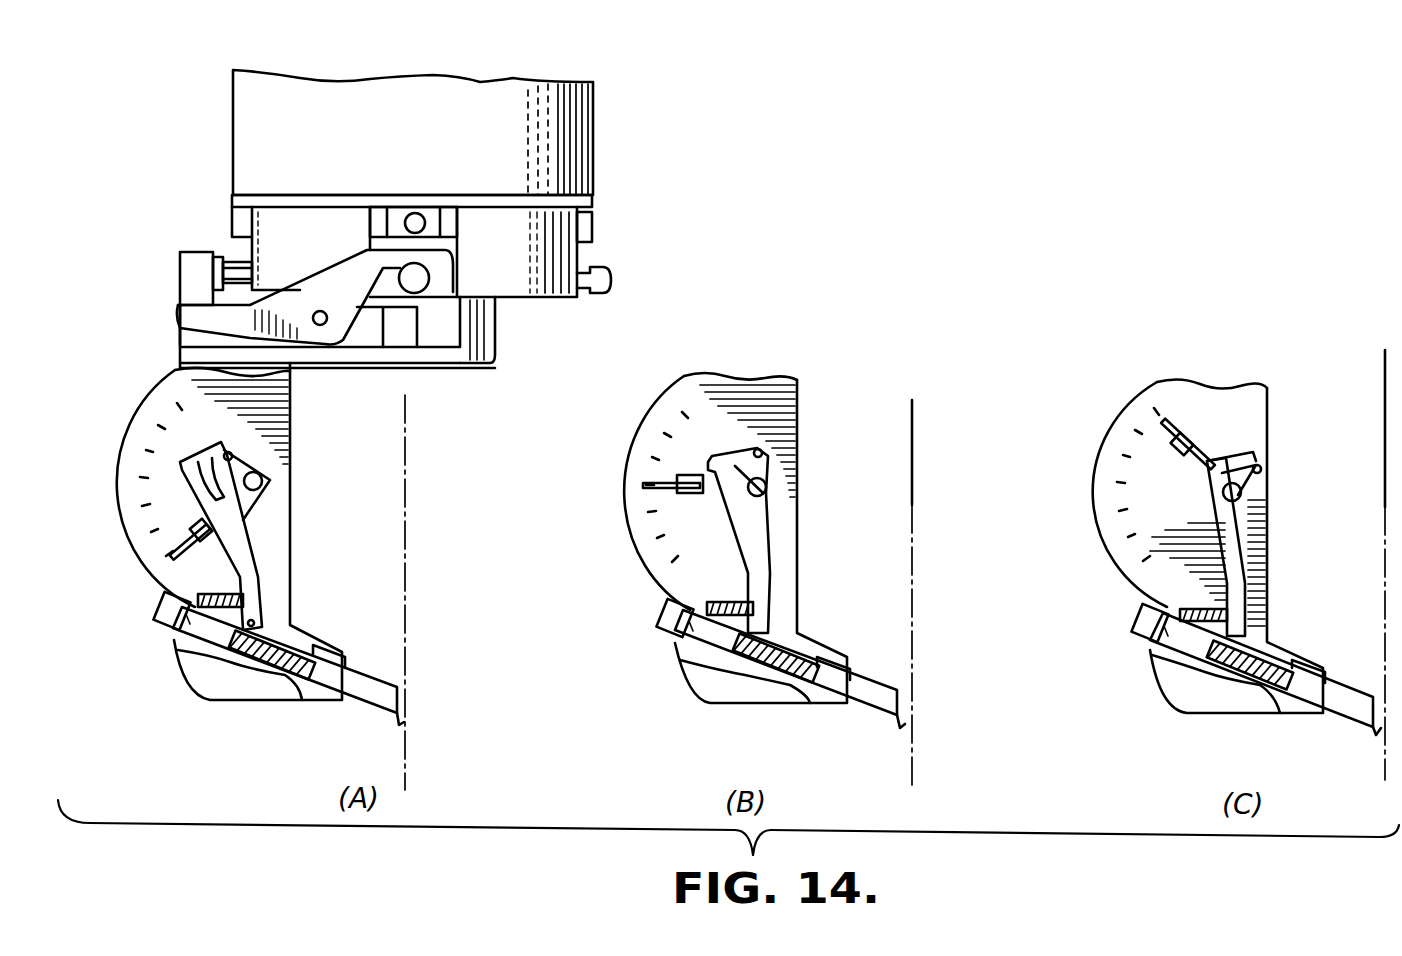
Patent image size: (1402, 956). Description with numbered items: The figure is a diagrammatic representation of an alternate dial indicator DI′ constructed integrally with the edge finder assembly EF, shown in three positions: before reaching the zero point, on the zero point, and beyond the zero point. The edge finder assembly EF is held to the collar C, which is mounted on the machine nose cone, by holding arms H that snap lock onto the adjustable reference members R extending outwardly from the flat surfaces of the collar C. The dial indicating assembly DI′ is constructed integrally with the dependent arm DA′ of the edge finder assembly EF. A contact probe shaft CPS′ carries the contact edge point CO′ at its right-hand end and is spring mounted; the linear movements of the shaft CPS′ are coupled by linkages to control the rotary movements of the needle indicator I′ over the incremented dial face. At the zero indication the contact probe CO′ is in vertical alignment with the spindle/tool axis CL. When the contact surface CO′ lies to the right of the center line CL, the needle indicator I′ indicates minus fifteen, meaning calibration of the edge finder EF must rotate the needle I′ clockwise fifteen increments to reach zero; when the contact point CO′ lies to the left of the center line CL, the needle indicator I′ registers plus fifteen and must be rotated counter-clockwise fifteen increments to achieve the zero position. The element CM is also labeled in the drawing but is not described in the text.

In FIG. 14A, the clamping member CM is at (186, 252).
In FIG. 14A, the edge finder indicator assembly EF is at (159, 300).
In FIG. 14A, the holding arm H is at (338, 287).
In FIG. 14A, the collar C is at (583, 223).
In FIG. 14A, the reference member R is at (612, 282).
In FIG. 14A, the dependent arm DA′ is at (287, 478).
In FIG. 14B, the dependent arm DA′ is at (780, 554).
In FIG. 14C, the dependent arm DA′ is at (1236, 550).
In FIG. 14A, the needle indicator I′ is at (185, 545).
In FIG. 14B, the needle indicator I′ is at (670, 483).
In FIG. 14C, the needle indicator I′ is at (1165, 420).
In FIG. 14A, the dial indicator DI′ is at (133, 566).
In FIG. 14B, the dial indicator DI′ is at (641, 586).
In FIG. 14C, the dial indicator DI′ is at (1125, 600).
In FIG. 14A, the spindle/tool axis CL is at (400, 588).
In FIG. 14B, the spindle/tool axis CL is at (912, 448).
In FIG. 14C, the spindle/tool axis CL is at (1385, 425).
In FIG. 14A, the contact probe shaft CPS′ is at (358, 698).
In FIG. 14B, the contact probe shaft CPS′ is at (873, 710).
In FIG. 14C, the contact probe shaft CPS′ is at (1353, 690).
In FIG. 14A, the contact edge point CO′ is at (406, 722).
In FIG. 14B, the contact edge point CO′ is at (908, 724).
In FIG. 14C, the contact edge point CO′ is at (1370, 738).